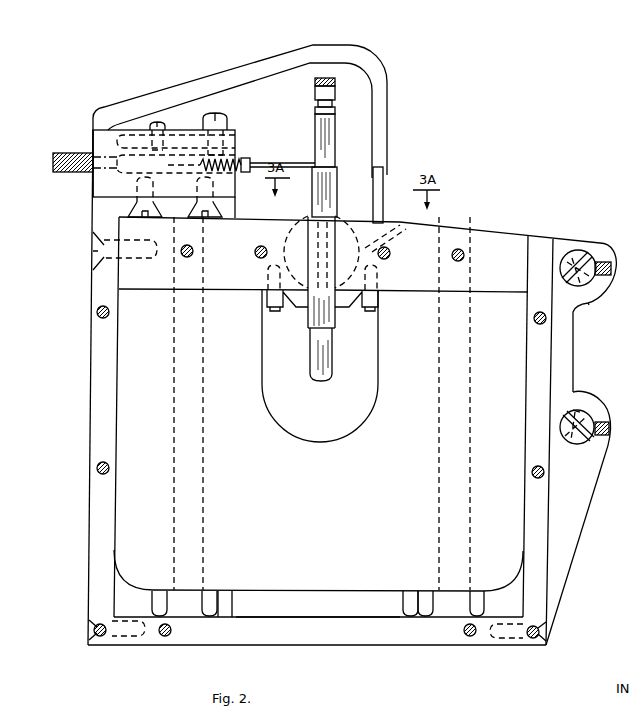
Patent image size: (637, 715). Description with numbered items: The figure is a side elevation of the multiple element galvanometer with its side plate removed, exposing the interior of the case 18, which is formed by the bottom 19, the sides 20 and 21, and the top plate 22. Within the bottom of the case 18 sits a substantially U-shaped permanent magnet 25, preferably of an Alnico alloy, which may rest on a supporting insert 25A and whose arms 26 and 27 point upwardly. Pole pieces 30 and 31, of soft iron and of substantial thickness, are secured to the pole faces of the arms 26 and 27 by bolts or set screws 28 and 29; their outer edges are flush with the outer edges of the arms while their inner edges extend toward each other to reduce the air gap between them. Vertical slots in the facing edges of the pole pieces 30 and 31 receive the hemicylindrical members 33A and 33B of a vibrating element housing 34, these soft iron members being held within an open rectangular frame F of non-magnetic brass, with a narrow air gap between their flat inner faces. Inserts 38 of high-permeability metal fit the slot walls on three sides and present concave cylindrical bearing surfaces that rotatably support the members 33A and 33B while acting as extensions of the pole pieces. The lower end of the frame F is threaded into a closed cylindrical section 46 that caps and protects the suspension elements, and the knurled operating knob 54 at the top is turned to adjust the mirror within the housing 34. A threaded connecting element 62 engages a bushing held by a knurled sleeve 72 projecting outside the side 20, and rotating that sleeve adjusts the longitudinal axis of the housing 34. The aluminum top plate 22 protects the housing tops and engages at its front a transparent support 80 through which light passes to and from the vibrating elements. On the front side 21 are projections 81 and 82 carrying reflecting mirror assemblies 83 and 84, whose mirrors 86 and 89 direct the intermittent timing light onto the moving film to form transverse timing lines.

The case 18 is at (88, 307).
The bottom 19 is at (357, 645).
The side 20 is at (84, 401).
The side 21 is at (583, 525).
The top plate 22 is at (320, 44).
The permanent magnet 25 is at (389, 584).
The supporting insert 25A is at (278, 612).
The arm 26 is at (262, 396).
The arm 27 is at (378, 390).
The set screw 28 is at (203, 489).
The set screw 29 is at (438, 496).
The pole piece 30 is at (237, 206).
The pole piece 31 is at (478, 226).
The hemicylindrical member 33A is at (308, 213).
The hemicylindrical member 33B is at (336, 213).
The vibrating element housing 34 is at (336, 132).
The insert 38 is at (285, 307).
The cylindrical section 46 is at (333, 366).
The operating knob 54 is at (313, 83).
The connecting element 62 is at (262, 159).
The sleeve 72 is at (80, 152).
The transparent support 80 is at (384, 188).
The projection 81 is at (611, 246).
The projection 82 is at (608, 450).
The reflecting mirror assembly 83 is at (578, 410).
The reflecting mirror assembly 84 is at (574, 251).
The mirror 86 is at (586, 411).
The mirror 89 is at (589, 304).
The frame F is at (340, 192).